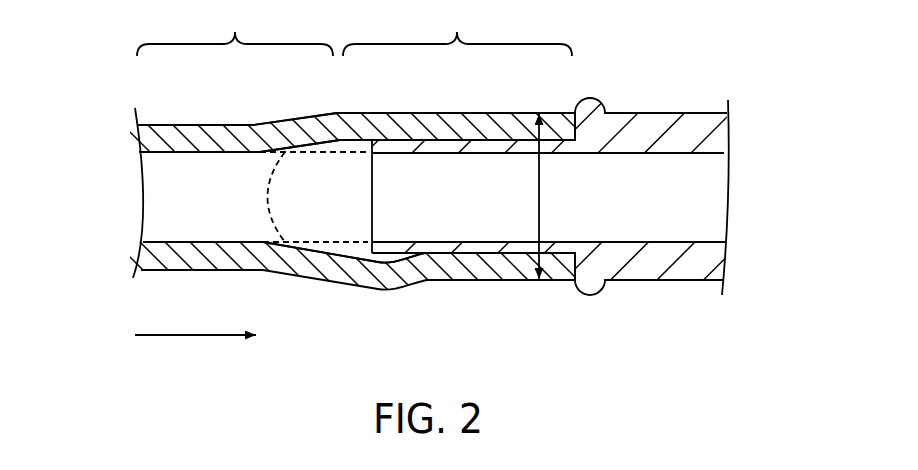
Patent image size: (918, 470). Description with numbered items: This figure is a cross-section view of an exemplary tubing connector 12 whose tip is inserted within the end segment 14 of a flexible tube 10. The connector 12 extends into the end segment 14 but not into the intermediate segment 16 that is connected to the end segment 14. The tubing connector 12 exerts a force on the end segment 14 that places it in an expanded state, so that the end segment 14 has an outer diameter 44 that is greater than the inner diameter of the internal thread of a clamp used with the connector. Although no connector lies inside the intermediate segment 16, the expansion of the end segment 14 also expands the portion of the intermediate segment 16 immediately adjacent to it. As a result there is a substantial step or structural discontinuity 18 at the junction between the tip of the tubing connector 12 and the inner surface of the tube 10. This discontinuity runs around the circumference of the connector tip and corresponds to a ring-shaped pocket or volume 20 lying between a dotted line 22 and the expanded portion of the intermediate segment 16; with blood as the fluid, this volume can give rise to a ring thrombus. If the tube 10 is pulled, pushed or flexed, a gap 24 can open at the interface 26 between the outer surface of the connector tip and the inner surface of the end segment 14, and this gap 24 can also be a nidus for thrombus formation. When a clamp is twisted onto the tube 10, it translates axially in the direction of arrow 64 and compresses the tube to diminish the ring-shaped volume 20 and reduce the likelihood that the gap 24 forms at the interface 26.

The tube 10 is at (212, 125).
The tubing connector 12 is at (692, 112).
The end segment 14 is at (457, 29).
The intermediate segment 16 is at (235, 29).
The structural discontinuity 18 is at (363, 156).
The ring-shaped volume 20 is at (341, 140).
The dotted line 22 is at (258, 197).
The gap 24 is at (384, 259).
The interface 26 is at (482, 141).
The outer diameter 44 is at (541, 196).
The arrow 64 is at (190, 337).